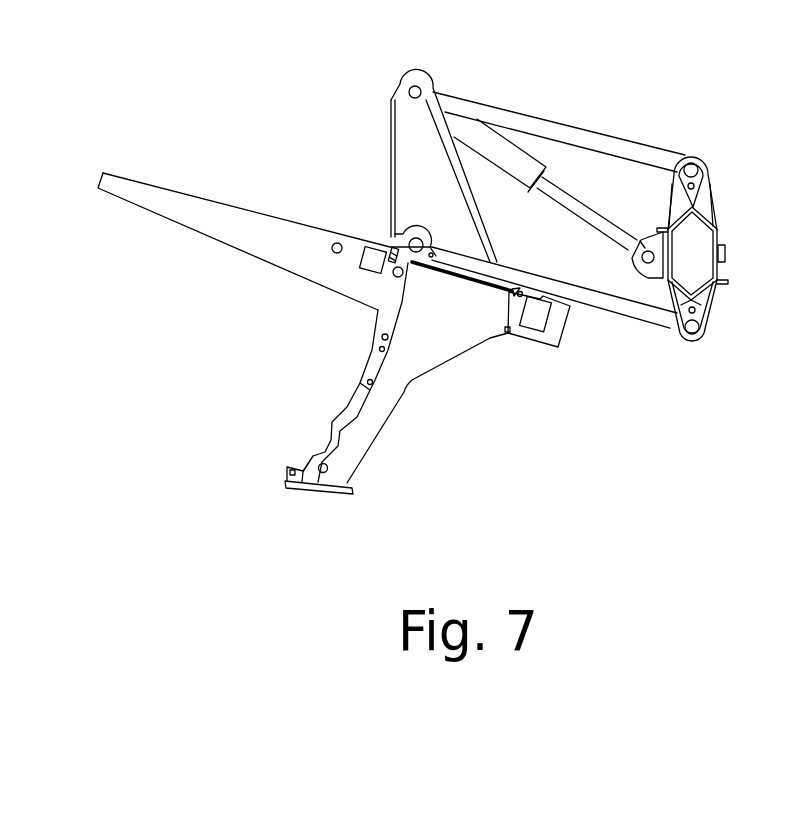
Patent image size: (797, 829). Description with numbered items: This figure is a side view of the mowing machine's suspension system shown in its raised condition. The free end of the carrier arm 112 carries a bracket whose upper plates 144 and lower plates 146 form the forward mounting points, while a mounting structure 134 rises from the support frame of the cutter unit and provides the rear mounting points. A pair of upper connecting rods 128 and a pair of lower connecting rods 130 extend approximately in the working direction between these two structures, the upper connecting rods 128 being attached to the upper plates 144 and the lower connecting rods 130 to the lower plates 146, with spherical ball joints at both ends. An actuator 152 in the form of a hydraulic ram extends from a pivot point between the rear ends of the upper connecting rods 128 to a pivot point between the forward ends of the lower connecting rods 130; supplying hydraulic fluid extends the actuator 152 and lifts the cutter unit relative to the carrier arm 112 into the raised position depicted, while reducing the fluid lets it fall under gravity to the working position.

The carrier arm 112 is at (712, 217).
The upper connecting rods 128 is at (627, 146).
The lower connecting rods 130 is at (633, 314).
The mounting structure 134 is at (407, 195).
The upper plates 144 is at (708, 180).
The lower plates 146 is at (712, 312).
The actuator 152 is at (518, 177).